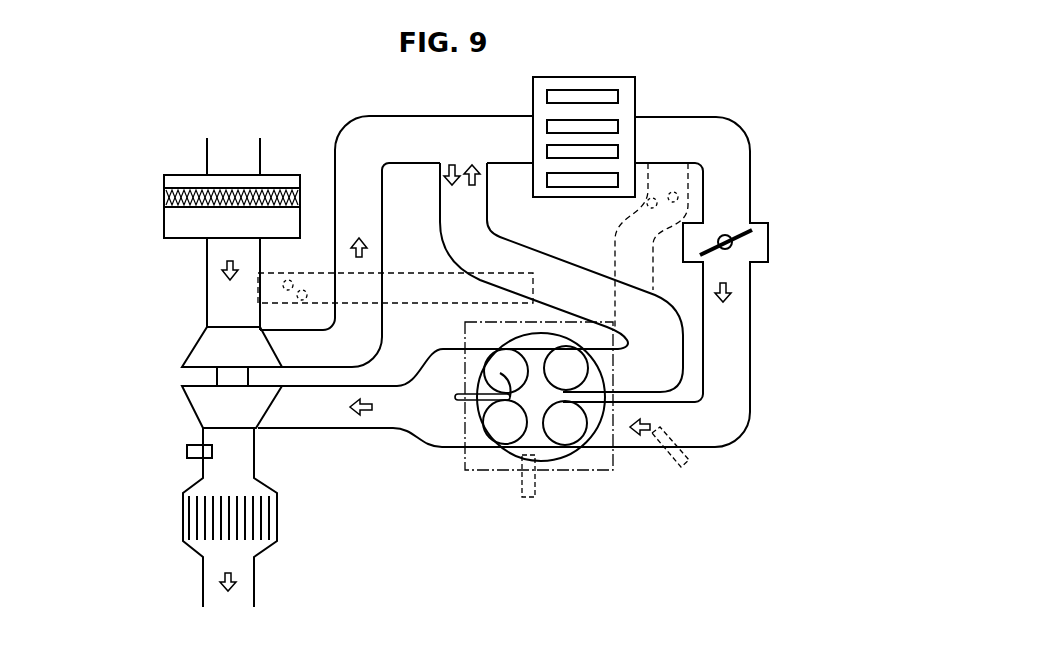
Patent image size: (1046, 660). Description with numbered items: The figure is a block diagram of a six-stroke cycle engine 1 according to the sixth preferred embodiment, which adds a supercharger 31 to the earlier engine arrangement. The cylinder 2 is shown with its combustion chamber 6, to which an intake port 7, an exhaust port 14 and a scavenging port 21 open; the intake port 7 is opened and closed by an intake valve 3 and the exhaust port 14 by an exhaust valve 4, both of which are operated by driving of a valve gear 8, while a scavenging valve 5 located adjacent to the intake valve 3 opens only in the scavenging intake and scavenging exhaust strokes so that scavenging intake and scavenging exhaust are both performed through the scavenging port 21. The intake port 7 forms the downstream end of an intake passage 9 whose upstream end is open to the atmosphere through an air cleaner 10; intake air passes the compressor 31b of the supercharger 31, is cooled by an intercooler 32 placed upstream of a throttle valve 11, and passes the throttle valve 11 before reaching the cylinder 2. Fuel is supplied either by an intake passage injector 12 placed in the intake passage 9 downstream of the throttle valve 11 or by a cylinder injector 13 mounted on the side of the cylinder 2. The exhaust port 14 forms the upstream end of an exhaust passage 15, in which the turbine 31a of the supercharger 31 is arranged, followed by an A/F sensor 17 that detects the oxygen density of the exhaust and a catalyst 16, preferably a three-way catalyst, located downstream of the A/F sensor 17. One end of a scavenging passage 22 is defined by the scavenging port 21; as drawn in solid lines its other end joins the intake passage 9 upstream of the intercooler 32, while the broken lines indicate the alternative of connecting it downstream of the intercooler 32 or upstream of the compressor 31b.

The six-stroke cycle engine 1 is at (110, 126).
The cylinder 2 is at (496, 420).
The intake valve 3 is at (565, 425).
The exhaust valve 4 is at (497, 405).
The scavenging valve 5 is at (567, 362).
The combustion chamber 6 is at (559, 445).
The intake port 7 is at (603, 430).
The valve gear 8 is at (505, 473).
The intake passage 9 is at (730, 182).
The air cleaner 10 is at (165, 210).
The throttle valve 11 is at (733, 241).
The intake passage injector 12 is at (686, 466).
The cylinder injector 13 is at (528, 497).
The exhaust port 14 is at (465, 368).
The exhaust passage 15 is at (313, 408).
The catalyst 16 is at (197, 518).
The A/F sensor 17 is at (187, 451).
The scavenging port 21 is at (597, 368).
The scavenging passage 22 is at (316, 273).
The supercharger 31 is at (179, 355).
The turbine 31a is at (200, 412).
The compressor 31b is at (200, 356).
The intercooler 32 is at (532, 102).